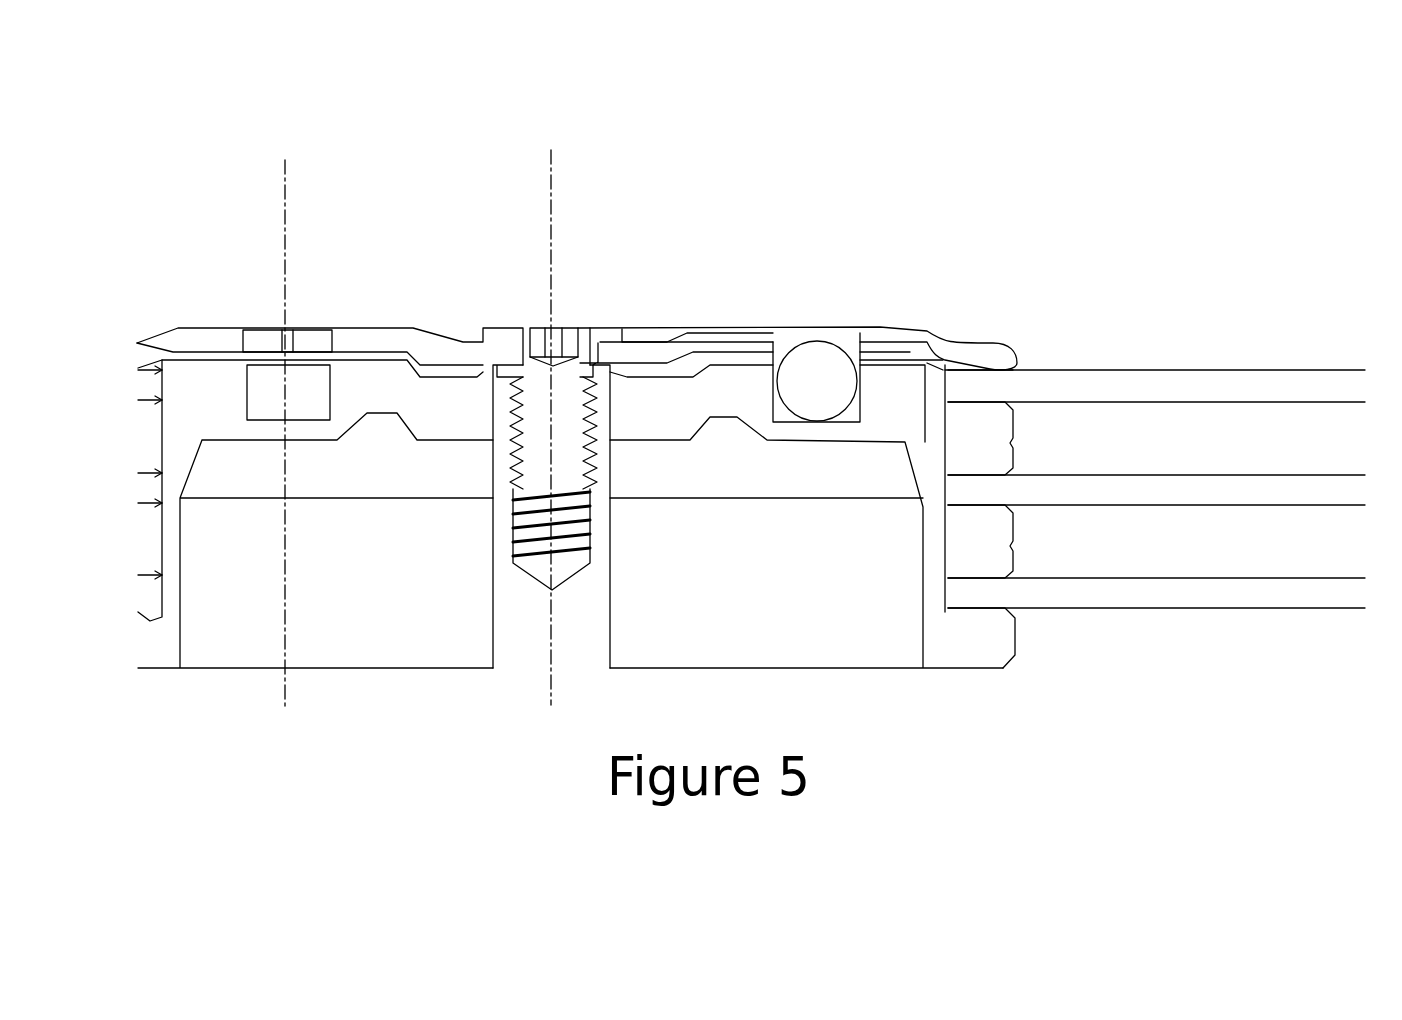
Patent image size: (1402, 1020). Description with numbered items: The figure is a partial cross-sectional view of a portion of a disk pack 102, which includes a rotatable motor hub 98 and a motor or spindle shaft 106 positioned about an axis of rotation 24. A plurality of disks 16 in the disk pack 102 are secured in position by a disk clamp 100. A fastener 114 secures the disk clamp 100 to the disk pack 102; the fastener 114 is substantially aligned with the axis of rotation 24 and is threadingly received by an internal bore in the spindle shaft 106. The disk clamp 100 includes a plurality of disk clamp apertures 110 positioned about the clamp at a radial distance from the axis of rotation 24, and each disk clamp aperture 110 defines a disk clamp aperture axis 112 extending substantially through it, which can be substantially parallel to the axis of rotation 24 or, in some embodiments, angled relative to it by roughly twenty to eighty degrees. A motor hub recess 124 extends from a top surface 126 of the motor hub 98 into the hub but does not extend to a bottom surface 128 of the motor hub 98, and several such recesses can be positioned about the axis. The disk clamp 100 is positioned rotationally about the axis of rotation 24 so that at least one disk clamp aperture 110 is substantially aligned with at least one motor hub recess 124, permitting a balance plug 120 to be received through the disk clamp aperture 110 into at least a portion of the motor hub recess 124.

The disks 16 is at (1072, 390).
The axis of rotation 24 is at (553, 183).
The motor hub 98 is at (622, 410).
The disk clamp 100 is at (912, 343).
The disk pack 102 is at (1085, 296).
The spindle shaft 106 is at (510, 650).
The disk clamp aperture 110 is at (321, 331).
The disk clamp aperture axis 112 is at (284, 197).
The fastener 114 is at (513, 337).
The balance plug 120 is at (812, 350).
The motor hub recess 124 is at (327, 393).
The top surface 126 is at (721, 362).
The bottom surface 128 is at (230, 440).